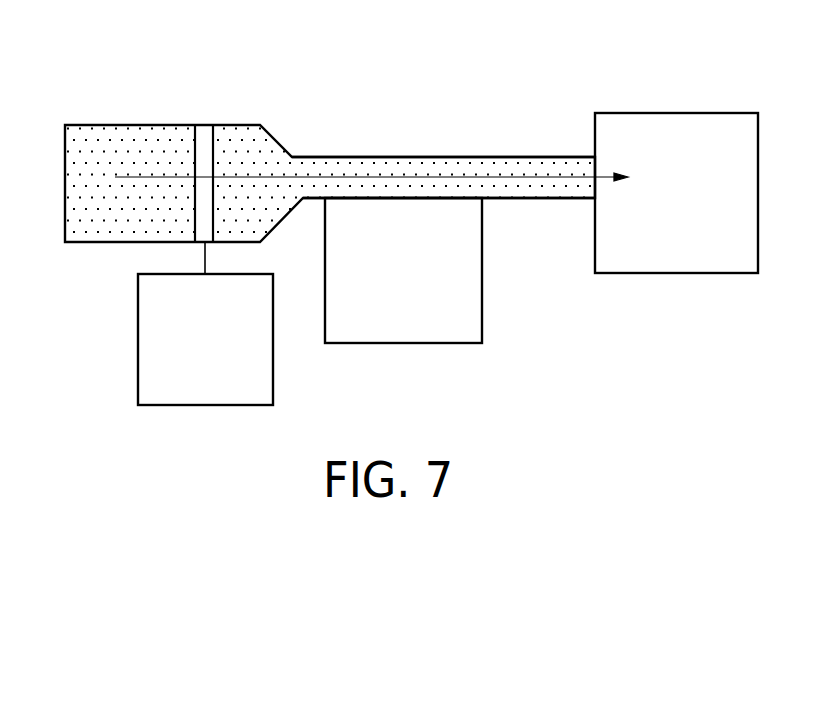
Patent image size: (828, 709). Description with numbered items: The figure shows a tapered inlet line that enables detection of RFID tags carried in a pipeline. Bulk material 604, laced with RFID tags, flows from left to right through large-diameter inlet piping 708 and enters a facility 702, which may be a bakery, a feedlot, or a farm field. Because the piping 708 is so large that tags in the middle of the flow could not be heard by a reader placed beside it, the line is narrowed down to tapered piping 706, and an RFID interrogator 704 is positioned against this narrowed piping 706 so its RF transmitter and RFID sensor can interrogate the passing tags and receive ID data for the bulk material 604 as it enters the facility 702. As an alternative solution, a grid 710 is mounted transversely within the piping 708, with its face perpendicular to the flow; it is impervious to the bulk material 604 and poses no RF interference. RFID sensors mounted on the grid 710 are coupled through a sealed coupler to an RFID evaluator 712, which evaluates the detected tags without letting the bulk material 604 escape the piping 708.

The bulk material 604 is at (140, 227).
The facility 702 is at (703, 227).
The RFID interrogator 704 is at (430, 314).
The piping 706 is at (432, 157).
The piping 708 is at (95, 124).
The grid 710 is at (202, 134).
The RFID evaluator 712 is at (228, 383).